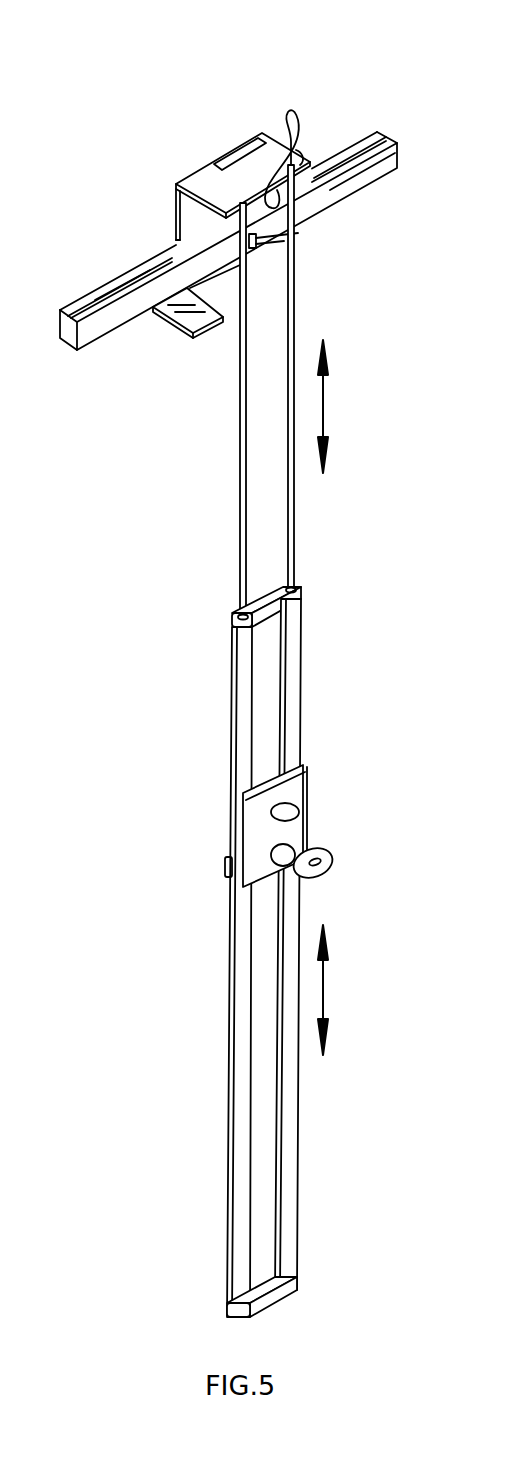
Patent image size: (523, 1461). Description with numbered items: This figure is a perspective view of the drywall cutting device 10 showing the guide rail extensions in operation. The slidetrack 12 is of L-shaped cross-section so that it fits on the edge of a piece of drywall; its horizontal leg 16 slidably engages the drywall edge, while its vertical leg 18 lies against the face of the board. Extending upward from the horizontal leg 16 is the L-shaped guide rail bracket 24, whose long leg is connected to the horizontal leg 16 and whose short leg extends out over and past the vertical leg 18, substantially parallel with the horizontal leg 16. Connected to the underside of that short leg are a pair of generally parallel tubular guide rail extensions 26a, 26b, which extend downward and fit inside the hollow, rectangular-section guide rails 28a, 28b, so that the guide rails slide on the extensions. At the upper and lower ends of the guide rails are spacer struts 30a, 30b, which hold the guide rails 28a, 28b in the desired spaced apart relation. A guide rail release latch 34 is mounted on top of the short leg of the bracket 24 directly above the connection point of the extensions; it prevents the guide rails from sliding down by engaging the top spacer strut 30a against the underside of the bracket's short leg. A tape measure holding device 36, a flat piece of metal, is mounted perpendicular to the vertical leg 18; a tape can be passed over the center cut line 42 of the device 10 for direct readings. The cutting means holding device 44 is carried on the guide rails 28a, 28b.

The drywall cutting device 10 is at (195, 85).
The slidetrack 12 is at (370, 148).
The horizontal leg 16 is at (105, 295).
The vertical leg 18 is at (362, 176).
The guide rail bracket 24 is at (212, 183).
The guide rail extension 26a is at (243, 487).
The guide rail extension 26b is at (287, 400).
The guide rail 28a is at (240, 700).
The guide rail 28b is at (293, 718).
The spacer strut 30a is at (264, 600).
The spacer strut 30b is at (265, 1290).
The guide rail release latch 34 is at (290, 130).
The tape measure holding device 36 is at (223, 380).
The center cut line 42 is at (297, 237).
The cutting means holding device 44 is at (336, 806).